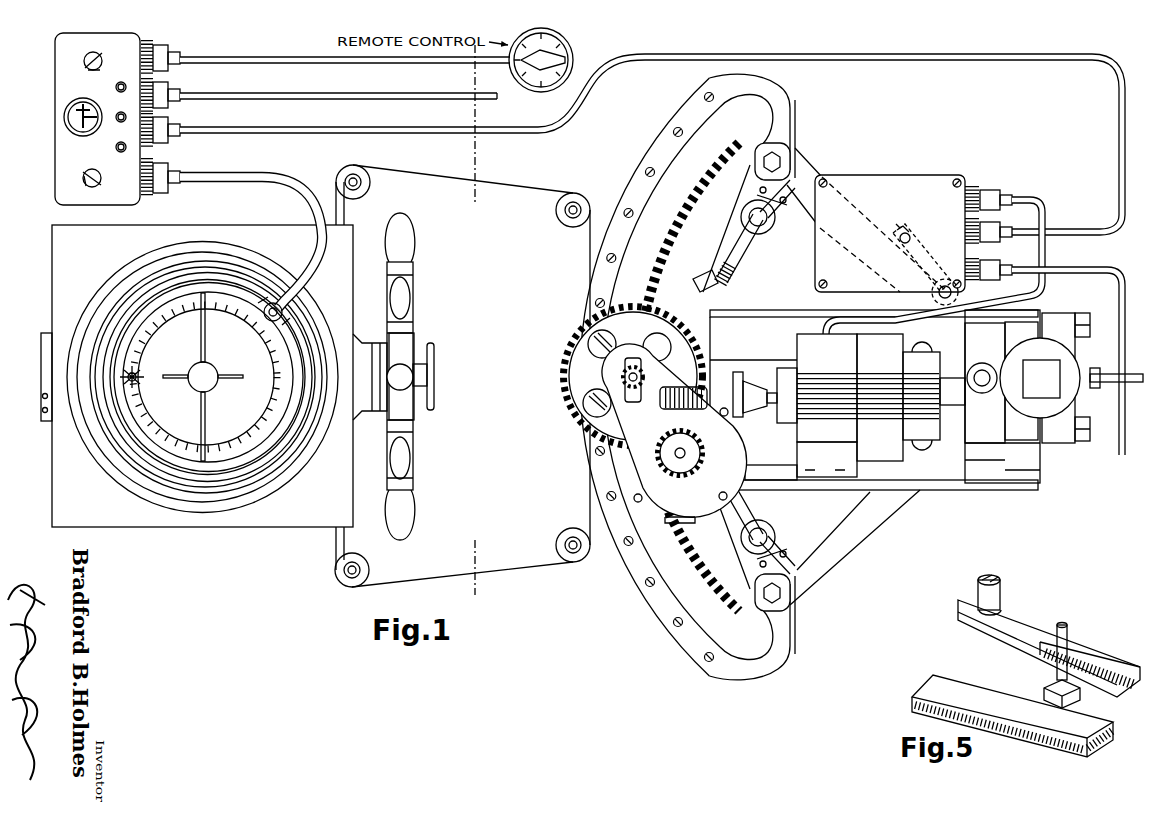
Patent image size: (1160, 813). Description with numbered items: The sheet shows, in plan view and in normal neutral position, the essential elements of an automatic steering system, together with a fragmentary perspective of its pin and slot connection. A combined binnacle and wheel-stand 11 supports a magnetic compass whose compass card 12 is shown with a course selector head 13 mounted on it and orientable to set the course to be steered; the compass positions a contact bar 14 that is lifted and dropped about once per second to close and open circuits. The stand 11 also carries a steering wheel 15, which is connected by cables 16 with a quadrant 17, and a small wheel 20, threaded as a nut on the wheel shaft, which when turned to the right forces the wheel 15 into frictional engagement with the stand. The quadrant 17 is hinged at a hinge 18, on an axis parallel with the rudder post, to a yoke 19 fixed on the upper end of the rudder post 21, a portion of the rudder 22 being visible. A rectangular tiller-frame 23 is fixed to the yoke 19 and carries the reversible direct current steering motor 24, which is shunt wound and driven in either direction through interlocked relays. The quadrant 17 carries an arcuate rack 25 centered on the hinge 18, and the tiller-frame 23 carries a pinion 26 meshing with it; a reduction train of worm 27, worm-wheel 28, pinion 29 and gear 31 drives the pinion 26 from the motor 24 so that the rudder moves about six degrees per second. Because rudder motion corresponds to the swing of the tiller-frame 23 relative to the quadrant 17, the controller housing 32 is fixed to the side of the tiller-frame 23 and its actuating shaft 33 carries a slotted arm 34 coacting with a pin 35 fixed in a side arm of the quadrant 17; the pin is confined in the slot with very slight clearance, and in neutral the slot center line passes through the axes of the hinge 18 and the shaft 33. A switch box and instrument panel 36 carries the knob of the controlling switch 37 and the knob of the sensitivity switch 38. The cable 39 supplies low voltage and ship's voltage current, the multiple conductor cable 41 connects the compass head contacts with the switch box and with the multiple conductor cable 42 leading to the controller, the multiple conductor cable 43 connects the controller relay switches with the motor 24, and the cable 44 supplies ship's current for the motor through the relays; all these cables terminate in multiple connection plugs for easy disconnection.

In FIG. 1, the combined binnacle and wheel-stand 11 is at (245, 527).
In FIG. 1, the compass card 12 is at (206, 377).
In FIG. 1, the course selector head 13 is at (140, 468).
In FIG. 1, the contact bar 14 is at (206, 353).
In FIG. 1, the steering wheel 15 is at (416, 452).
In FIG. 1, the cables 16 is at (518, 191).
In FIG. 1, the quadrant 17 is at (812, 172).
In FIG. 5, the quadrant 17 is at (968, 692).
In FIG. 1, the hinge 18 is at (980, 388).
In FIG. 1, the yoke 19 is at (1033, 442).
In FIG. 1, the small wheel 20 is at (437, 377).
In FIG. 1, the rudder post 21 is at (1040, 378).
In FIG. 1, the rudder 22 is at (1112, 375).
In FIG. 1, the tiller-frame 23 is at (753, 305).
In FIG. 1, the reversible direct current motor 24 is at (797, 340).
In FIG. 1, the arcuate rack 25 is at (700, 570).
In FIG. 1, the pinion 26 is at (622, 377).
In FIG. 1, the worm 27 is at (680, 388).
In FIG. 1, the worm-wheel 28 is at (700, 420).
In FIG. 1, the pinion 29 is at (665, 462).
In FIG. 1, the gear 31 is at (562, 358).
In FIG. 1, the housing 32 is at (876, 178).
In FIG. 1, the actuating shaft 33 is at (908, 236).
In FIG. 5, the actuating shaft 33 is at (997, 588).
In FIG. 1, the slotted arm 34 is at (922, 254).
In FIG. 5, the slotted arm 34 is at (1031, 617).
In FIG. 1, the pin 35 is at (940, 286).
In FIG. 5, the pin 35 is at (1066, 630).
In FIG. 1, the switch box and instrument panel 36 is at (54, 146).
In FIG. 1, the knob of the controlling switch 37 is at (99, 180).
In FIG. 1, the knob of the sensitivity switch 38 is at (84, 62).
In FIG. 1, the cable 39 is at (363, 92).
In FIG. 1, the multiple conductor cable 41 is at (276, 177).
In FIG. 1, the multiple conductor cable 42 is at (410, 133).
In FIG. 1, the multiple conductor cable 43 is at (1036, 212).
In FIG. 1, the cable 44 is at (1086, 272).